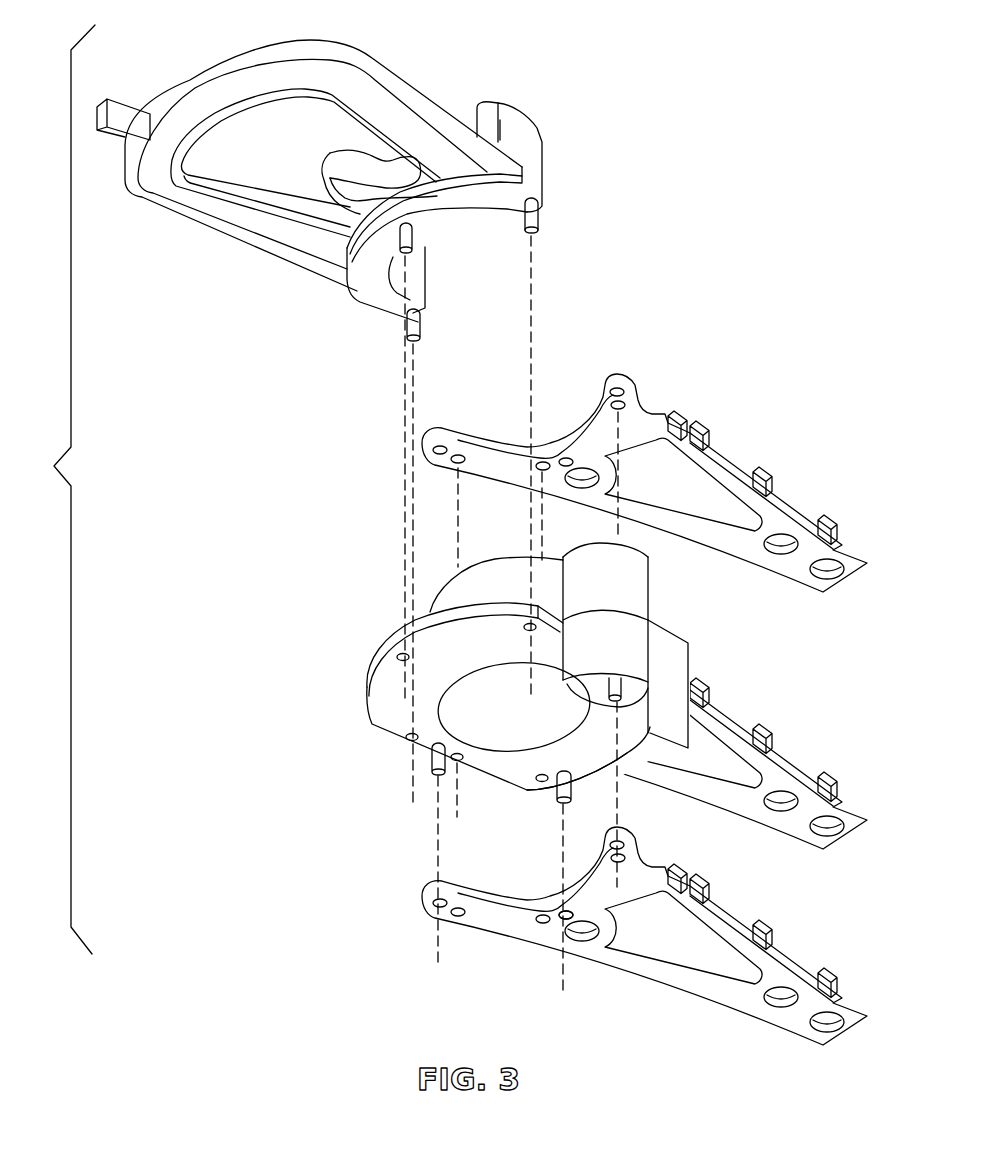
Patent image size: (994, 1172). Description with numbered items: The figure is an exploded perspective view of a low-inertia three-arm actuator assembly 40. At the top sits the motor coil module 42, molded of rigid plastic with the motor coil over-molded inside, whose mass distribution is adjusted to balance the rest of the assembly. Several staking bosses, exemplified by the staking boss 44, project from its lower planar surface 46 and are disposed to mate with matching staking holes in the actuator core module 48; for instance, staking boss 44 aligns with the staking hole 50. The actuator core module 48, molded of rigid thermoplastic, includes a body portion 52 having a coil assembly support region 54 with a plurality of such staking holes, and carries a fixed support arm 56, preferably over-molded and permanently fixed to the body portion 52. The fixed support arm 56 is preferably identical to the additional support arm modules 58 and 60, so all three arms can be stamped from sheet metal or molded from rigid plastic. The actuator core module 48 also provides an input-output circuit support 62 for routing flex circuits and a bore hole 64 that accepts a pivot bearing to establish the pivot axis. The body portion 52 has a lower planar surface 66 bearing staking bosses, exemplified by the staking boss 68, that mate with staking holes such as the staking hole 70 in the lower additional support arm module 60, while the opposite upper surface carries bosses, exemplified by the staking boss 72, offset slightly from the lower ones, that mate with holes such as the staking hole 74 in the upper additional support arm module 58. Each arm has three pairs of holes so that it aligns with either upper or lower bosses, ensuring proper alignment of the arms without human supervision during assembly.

The three-arm actuator assembly 40 is at (56, 489).
The motor coil module 42 is at (404, 56).
The staking boss 44 is at (545, 226).
The lower planar surface 46 is at (472, 200).
The actuator core module 48 is at (617, 645).
The staking hole 50 is at (524, 627).
The body portion 52 is at (445, 719).
The coil assembly support region 54 is at (381, 641).
The fixed support arm 56 is at (798, 767).
The additional support arm module 58 is at (644, 483).
The additional support arm module 60 is at (644, 936).
The input-output circuit support 62 is at (712, 650).
The bore hole 64 is at (504, 709).
The lower planar surface 66 is at (601, 759).
The staking boss 68 is at (556, 798).
The staking hole 70 is at (562, 908).
The staking boss 72 is at (541, 773).
The staking hole 74 is at (543, 458).